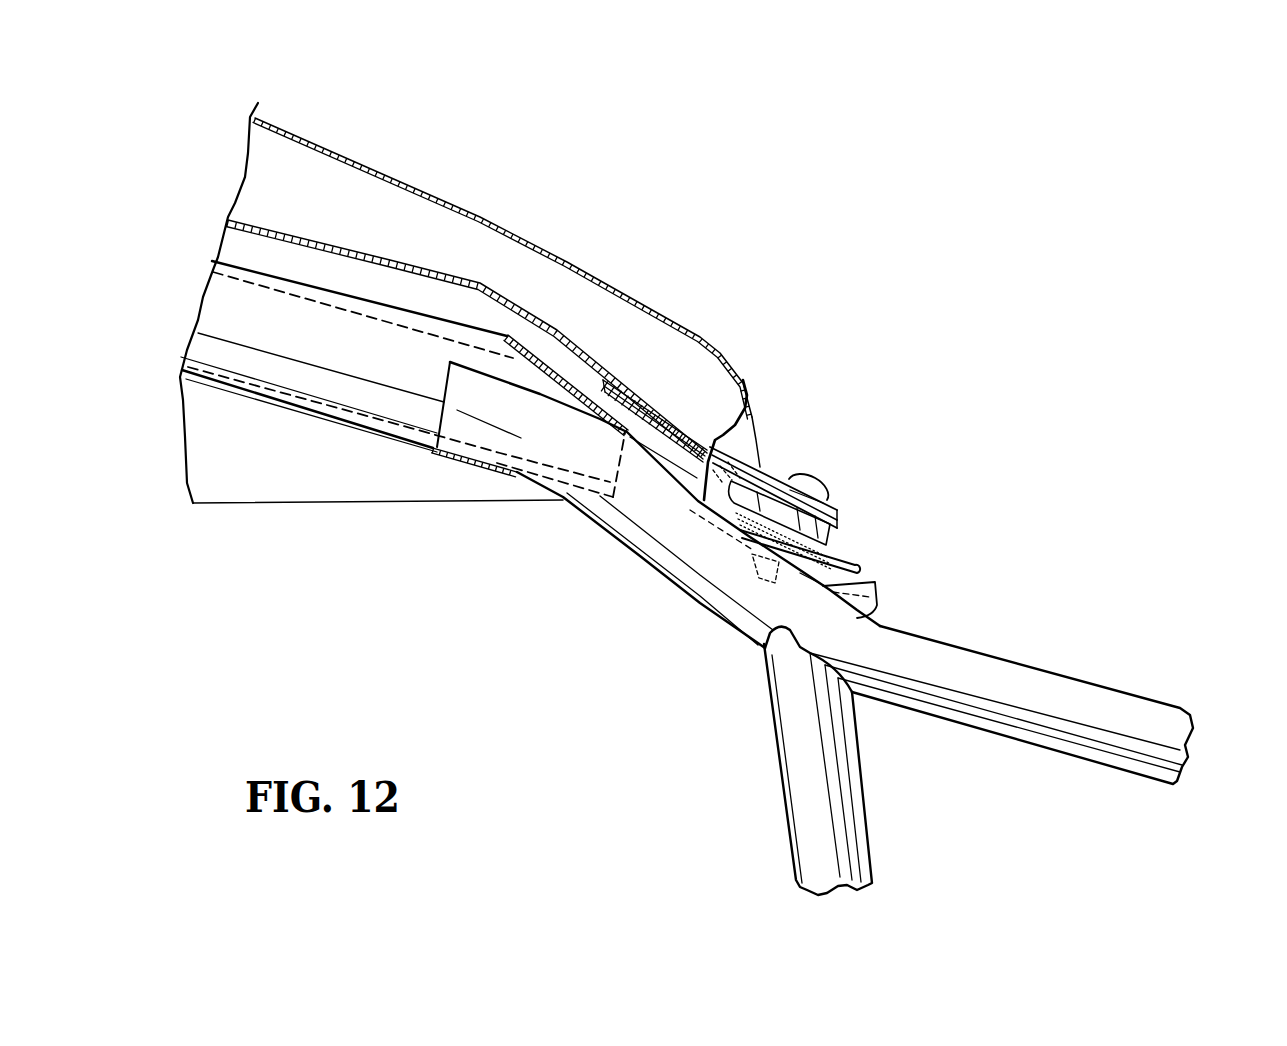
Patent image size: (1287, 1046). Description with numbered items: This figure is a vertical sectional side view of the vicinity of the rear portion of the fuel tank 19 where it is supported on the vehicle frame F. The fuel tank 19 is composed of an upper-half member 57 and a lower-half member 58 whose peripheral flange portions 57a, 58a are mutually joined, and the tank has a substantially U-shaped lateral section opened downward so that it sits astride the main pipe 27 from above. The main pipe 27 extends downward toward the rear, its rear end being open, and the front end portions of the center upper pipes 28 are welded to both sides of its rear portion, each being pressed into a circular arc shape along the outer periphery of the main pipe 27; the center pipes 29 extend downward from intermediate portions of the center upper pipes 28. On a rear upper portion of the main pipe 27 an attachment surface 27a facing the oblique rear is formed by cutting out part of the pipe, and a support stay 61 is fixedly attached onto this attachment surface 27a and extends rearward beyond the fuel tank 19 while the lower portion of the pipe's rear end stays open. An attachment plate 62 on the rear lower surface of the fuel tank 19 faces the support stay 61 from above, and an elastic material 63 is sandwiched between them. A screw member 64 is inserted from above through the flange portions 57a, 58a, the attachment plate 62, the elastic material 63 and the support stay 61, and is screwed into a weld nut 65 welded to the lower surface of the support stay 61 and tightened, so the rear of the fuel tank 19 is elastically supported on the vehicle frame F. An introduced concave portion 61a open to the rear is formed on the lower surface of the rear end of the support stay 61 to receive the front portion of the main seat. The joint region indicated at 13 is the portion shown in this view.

The joint portion 13 is at (758, 323).
The fuel tank 19 is at (463, 100).
The upper-half member 57 is at (343, 155).
The lower-half member 58 is at (390, 263).
The main pipe 27 is at (360, 395).
The attachment surface 27a is at (528, 463).
The attachment plate 62 is at (632, 392).
The support stay 61 is at (660, 452).
The flange portion 58a is at (771, 473).
The flange portion 57a is at (836, 513).
The screw member 64 is at (798, 477).
The elastic material 63 is at (823, 535).
The introduced concave portion 61a is at (877, 612).
The weld nut 65 is at (753, 562).
The center upper pipe 28 is at (963, 673).
The center pipe 29 is at (790, 770).
The vehicle frame F is at (1052, 673).